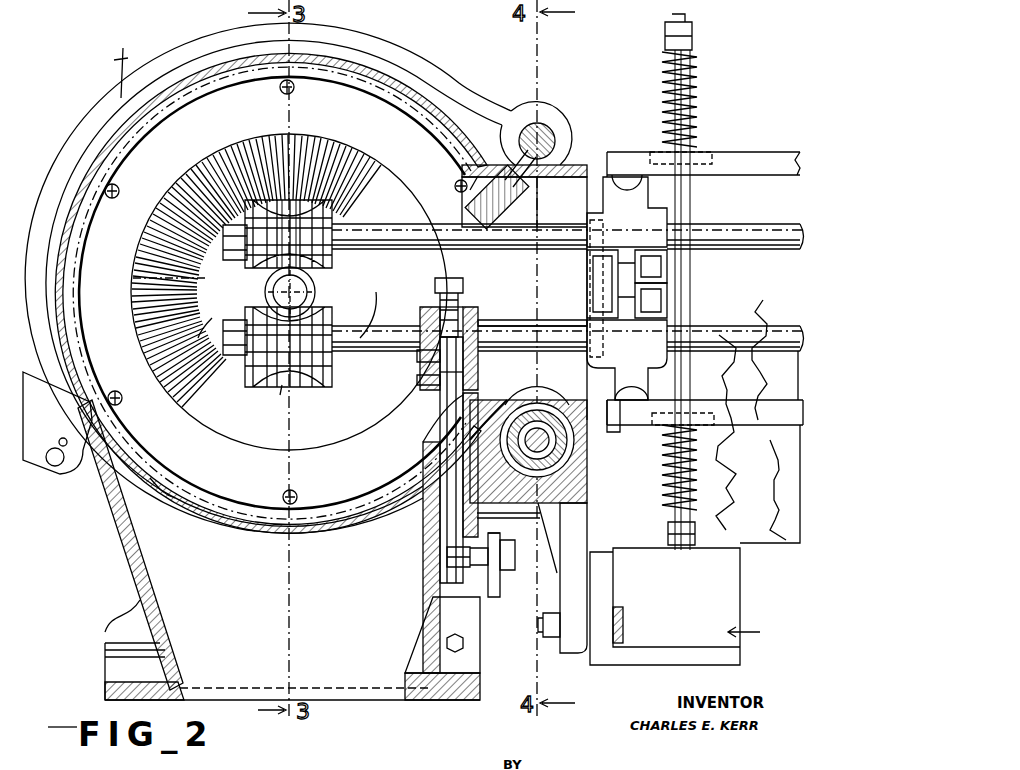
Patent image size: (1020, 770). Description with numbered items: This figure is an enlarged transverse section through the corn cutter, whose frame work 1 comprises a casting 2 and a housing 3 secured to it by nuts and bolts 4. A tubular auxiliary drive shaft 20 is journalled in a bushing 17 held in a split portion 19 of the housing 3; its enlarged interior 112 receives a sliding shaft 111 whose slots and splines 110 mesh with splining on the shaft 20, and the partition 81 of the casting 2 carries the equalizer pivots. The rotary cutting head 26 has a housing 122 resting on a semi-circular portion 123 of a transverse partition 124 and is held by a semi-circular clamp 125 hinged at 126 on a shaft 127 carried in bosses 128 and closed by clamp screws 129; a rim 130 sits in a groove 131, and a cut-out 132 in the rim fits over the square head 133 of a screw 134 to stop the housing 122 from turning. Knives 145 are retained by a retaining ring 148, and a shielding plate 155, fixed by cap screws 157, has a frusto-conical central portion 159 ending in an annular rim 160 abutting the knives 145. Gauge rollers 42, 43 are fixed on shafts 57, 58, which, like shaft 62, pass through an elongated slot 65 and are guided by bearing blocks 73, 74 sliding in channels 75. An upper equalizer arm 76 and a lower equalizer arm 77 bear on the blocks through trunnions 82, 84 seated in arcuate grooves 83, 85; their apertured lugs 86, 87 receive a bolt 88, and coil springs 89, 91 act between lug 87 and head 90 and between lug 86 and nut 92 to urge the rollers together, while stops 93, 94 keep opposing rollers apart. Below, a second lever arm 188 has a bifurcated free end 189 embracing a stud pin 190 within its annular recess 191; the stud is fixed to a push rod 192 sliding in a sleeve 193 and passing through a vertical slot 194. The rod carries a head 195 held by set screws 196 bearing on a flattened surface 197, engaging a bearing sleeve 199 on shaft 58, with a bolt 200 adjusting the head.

The frame work 1 is at (441, 343).
The casting 2 is at (722, 604).
The housing 3 is at (125, 556).
The nuts and bolts 4 is at (620, 612).
The bushing 17 is at (575, 442).
The split portion 19 is at (545, 410).
The auxiliary drive shaft 20 is at (528, 412).
The rotary cutting head 26 is at (398, 110).
The gauge roller 42 is at (330, 205).
The gauge roller 43 is at (250, 386).
The shaft 57 is at (424, 232).
The shaft 58 is at (400, 322).
The shaft 62 is at (290, 292).
The elongated slot 65 is at (590, 165).
The bearing block 73 is at (638, 227).
The bearing block 74 is at (638, 348).
The channel 75 is at (594, 276).
The upper equalizer arm 76 is at (790, 160).
The lower equalizer arm 77 is at (720, 425).
The partition 81 is at (792, 541).
The trunnion 82 is at (618, 172).
The arcuate groove 83 is at (640, 186).
The trunnion 84 is at (622, 420).
The arcuate groove 85 is at (640, 394).
The apertured lug 86 is at (705, 158).
The apertured lug 87 is at (706, 428).
The bolt 88 is at (688, 210).
The coil spring 89 is at (698, 488).
The head 90 is at (696, 532).
The coil spring 91 is at (698, 82).
The nut 92 is at (693, 35).
The stop 93 is at (638, 279).
The stop 94 is at (638, 290).
The slots and splines 110 is at (560, 503).
The shaft 111 is at (538, 428).
The enlarged interior 112 is at (512, 445).
The housing 122 is at (537, 208).
The semi-circular portion 123 is at (226, 504).
The transverse partition 124 is at (365, 572).
The semi-circular clamp 125 is at (102, 100).
The hinge 126 is at (508, 122).
The shaft 127 is at (552, 132).
The boss 128 is at (548, 122).
The clamp screw 129 is at (40, 396).
The rim 130 is at (155, 495).
The groove 131 is at (253, 526).
The cut-out 132 is at (478, 200).
The square head 133 is at (452, 218).
The screw 134 is at (468, 182).
The knives 145 is at (283, 203).
The retaining ring 148 is at (169, 278).
The shielding plate 155 is at (386, 500).
The cap screw 157 is at (280, 88).
The frusto-conical central portion 159 is at (345, 413).
The annular rim 160 is at (300, 203).
The second lever arm 188 is at (492, 594).
The bifurcated free end 189 is at (500, 540).
The stud pin 190 is at (500, 580).
The annular recess 191 is at (515, 550).
The push rod 192 is at (440, 426).
The sleeve 193 is at (428, 540).
The vertical slot 194 is at (433, 603).
The head 195 is at (470, 305).
The set screw 196 is at (448, 370).
The flattened surface 197 is at (450, 376).
The bearing sleeve 199 is at (556, 328).
The bolt 200 is at (445, 280).